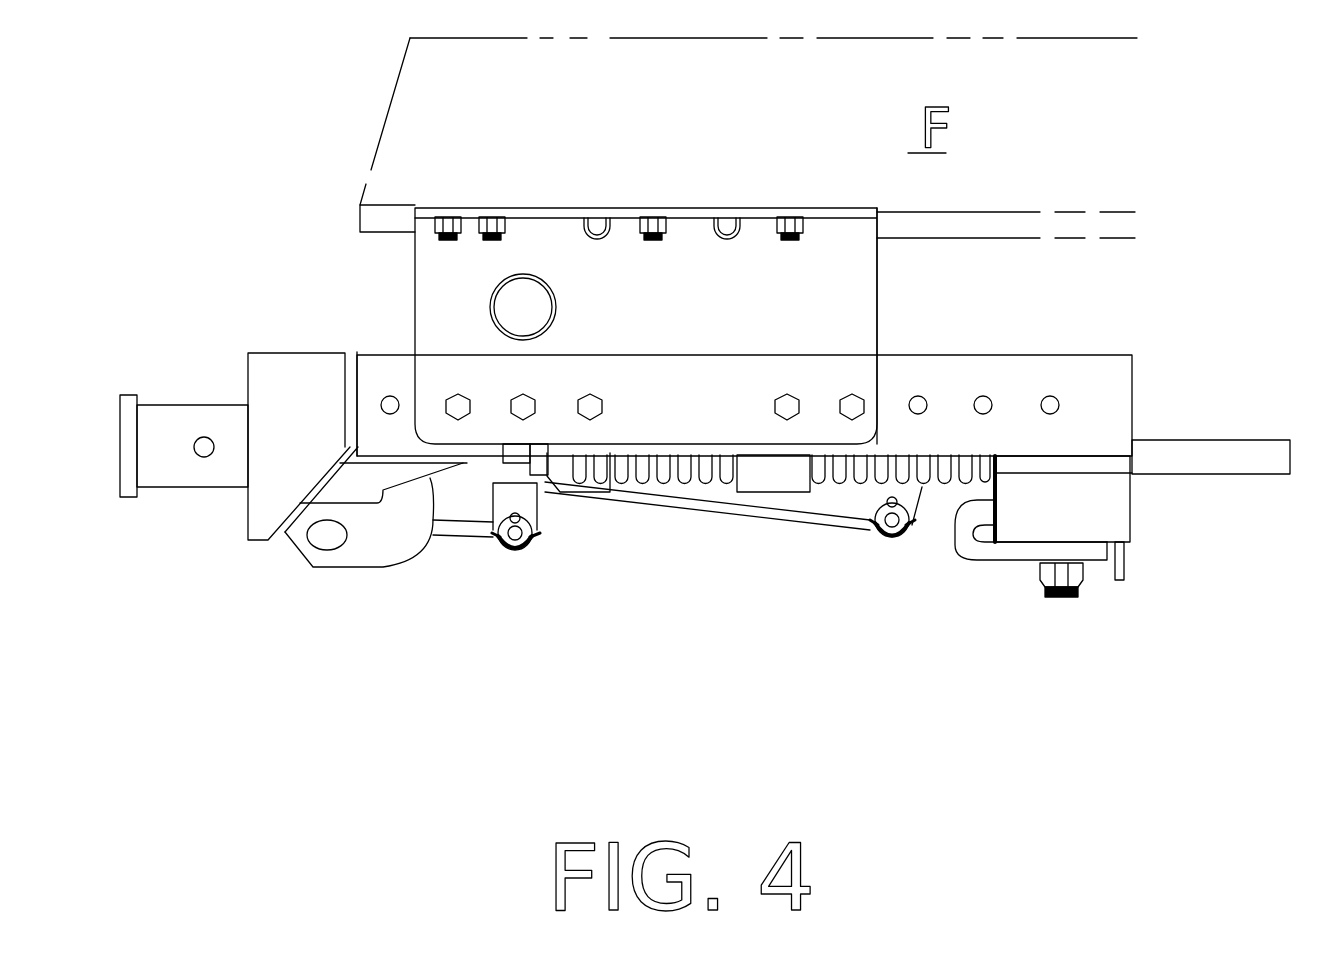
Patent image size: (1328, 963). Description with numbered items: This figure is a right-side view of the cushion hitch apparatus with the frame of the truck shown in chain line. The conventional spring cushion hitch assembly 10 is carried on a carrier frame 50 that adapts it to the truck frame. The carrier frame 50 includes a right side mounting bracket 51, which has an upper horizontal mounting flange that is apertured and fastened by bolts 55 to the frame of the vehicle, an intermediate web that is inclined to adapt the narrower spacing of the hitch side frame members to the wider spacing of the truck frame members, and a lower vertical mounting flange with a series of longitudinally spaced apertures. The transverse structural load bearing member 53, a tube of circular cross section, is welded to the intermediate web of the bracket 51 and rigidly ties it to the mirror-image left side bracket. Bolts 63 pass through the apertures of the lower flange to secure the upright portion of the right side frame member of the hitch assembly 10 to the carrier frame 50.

The hitch assembly 10 is at (1070, 337).
The carrier frame 50 is at (915, 304).
The right side mounting bracket 51 is at (413, 277).
The transverse structural load bearing member 53 is at (555, 290).
The bolts 55 is at (790, 240).
The bolts 63 is at (460, 420).